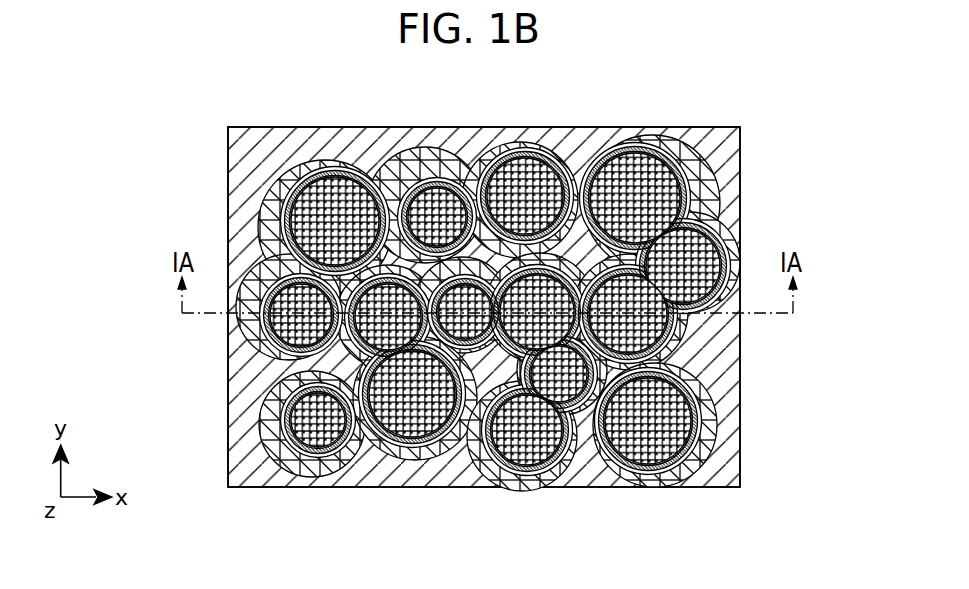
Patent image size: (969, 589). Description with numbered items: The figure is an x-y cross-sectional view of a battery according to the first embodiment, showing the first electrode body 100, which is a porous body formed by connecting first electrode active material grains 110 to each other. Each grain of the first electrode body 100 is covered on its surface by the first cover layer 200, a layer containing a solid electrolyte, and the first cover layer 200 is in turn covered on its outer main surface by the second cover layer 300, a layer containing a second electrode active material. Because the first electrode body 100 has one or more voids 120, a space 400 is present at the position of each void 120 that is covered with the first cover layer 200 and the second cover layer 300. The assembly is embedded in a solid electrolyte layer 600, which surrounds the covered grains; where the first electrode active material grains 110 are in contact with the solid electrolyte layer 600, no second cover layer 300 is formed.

The first electrode body 100 is at (544, 287).
The first electrode active material grains 110 is at (712, 237).
The second cover layer 300 is at (695, 247).
The first cover layer 200 is at (722, 290).
The space 400 is at (495, 279).
The void 120 is at (542, 260).
The solid electrolyte layer 600 is at (735, 473).